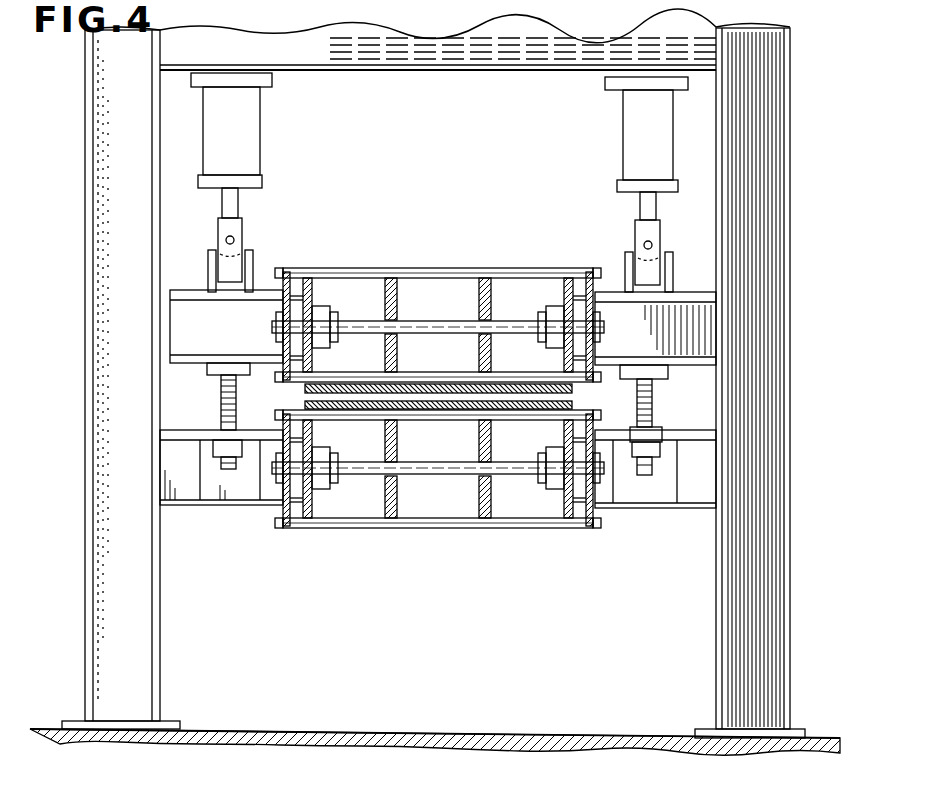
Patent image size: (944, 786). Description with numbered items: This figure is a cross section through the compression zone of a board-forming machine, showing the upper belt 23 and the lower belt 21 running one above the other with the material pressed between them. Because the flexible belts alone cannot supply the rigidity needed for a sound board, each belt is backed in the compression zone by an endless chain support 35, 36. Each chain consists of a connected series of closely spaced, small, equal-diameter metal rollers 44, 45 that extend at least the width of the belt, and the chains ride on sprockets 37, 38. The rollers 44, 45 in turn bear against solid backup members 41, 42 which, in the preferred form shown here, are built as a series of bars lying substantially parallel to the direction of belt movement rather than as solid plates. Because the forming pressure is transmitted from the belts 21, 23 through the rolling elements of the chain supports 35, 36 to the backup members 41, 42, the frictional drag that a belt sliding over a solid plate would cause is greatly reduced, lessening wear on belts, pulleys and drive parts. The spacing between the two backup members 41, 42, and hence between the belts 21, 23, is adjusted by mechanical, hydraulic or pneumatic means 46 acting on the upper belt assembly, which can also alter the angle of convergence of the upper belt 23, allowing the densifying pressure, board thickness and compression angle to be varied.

The lower belt 21 is at (466, 409).
The upper belt 23 is at (428, 388).
The endless chain support 35 is at (280, 528).
The endless chain support 36 is at (286, 268).
The sprocket 37 is at (283, 515).
The sprocket 38 is at (283, 300).
The backup member 41 is at (312, 430).
The backup member 42 is at (312, 290).
The metal roller 44 is at (472, 528).
The metal roller 45 is at (428, 268).
The mechanical, hydraulic or pneumatic means 46 is at (245, 134).